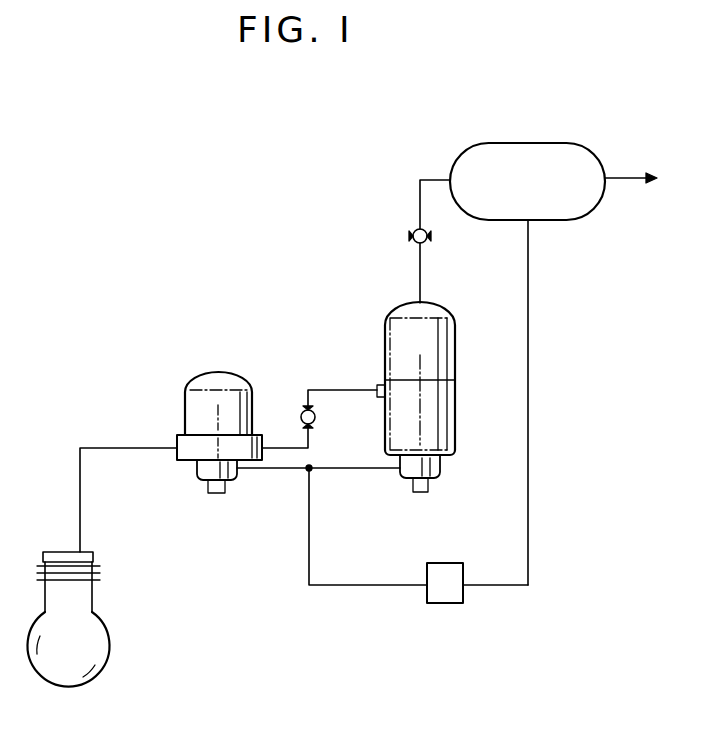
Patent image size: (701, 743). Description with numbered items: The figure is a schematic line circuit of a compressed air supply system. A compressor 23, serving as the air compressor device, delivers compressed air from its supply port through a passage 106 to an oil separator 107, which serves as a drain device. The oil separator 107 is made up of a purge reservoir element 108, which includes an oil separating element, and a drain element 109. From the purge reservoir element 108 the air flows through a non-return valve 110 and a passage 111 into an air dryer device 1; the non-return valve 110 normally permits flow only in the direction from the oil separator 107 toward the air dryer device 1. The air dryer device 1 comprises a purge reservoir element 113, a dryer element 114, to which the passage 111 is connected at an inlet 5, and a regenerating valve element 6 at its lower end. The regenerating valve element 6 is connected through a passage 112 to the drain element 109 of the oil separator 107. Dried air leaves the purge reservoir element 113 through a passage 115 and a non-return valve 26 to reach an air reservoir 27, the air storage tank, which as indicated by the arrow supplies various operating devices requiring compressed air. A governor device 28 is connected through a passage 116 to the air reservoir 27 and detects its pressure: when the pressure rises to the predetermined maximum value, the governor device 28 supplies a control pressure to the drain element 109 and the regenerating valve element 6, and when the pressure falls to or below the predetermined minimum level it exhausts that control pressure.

The air dryer device 1 is at (436, 376).
The inlet port 5 is at (378, 387).
The regenerating valve element 6 is at (442, 476).
The compressor 23 is at (66, 552).
The non-return valve 26 is at (413, 232).
The air reservoir 27 is at (504, 142).
The governor device 28 is at (447, 604).
The passage 106 is at (120, 447).
The oil separator 107 is at (227, 413).
The purge reservoir element 108 is at (214, 376).
The drain element 109 is at (199, 472).
The non-return valve 110 is at (315, 417).
The passage 111 is at (280, 446).
The passage 112 is at (267, 470).
The purge reservoir element 113 is at (447, 337).
The dryer element 114 is at (447, 415).
The passage 115 is at (420, 270).
The passage 116 is at (529, 365).